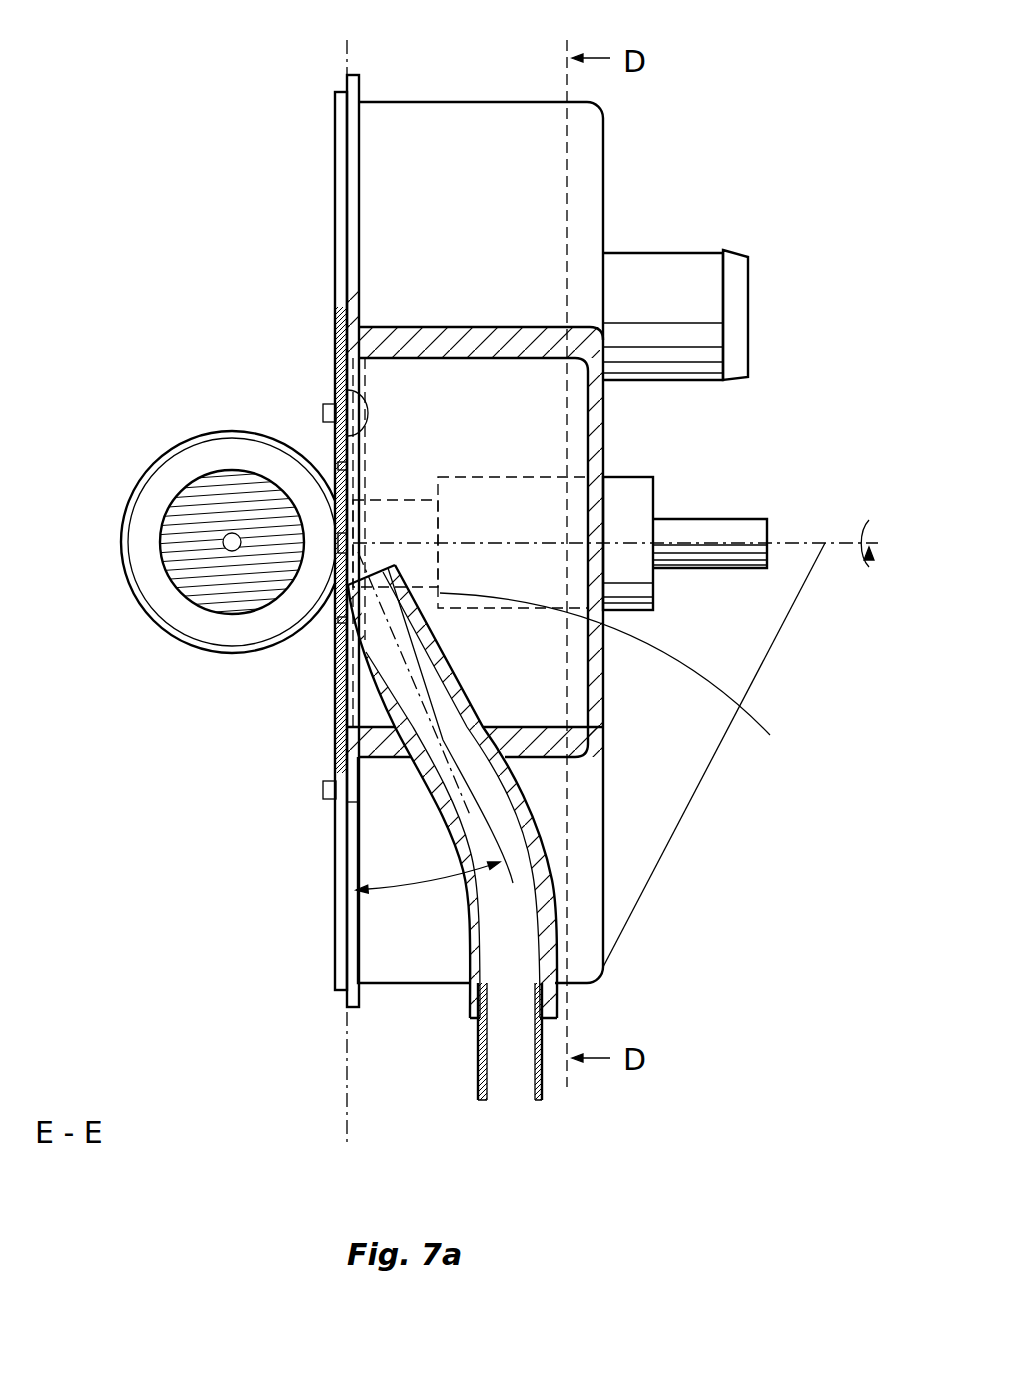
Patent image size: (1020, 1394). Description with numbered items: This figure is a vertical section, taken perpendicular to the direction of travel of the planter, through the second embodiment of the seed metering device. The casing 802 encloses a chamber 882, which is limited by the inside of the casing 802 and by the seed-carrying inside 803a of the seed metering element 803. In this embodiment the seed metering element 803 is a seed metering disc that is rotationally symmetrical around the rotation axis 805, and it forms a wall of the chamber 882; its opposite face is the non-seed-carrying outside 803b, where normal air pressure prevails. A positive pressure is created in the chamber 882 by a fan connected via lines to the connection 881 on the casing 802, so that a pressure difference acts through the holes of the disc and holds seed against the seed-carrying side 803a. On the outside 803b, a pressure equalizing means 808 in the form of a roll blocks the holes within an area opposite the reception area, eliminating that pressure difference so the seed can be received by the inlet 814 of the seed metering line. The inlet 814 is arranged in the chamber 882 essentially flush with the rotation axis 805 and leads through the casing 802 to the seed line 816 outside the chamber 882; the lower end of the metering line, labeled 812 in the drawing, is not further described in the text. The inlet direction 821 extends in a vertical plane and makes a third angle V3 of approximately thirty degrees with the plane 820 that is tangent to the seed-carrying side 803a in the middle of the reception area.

The casing 802 is at (605, 153).
The seed metering element 803 is at (345, 143).
The seed-carrying inside 803a is at (345, 400).
The outside 803b is at (336, 268).
The rotation axis 805 is at (742, 542).
The pressure equalizing means 808 is at (172, 448).
The tube end fitting 812 is at (466, 1031).
The inlet 814 is at (641, 684).
The seed line 816 is at (477, 1067).
The plane 820 is at (345, 1060).
The inlet direction 821 is at (487, 827).
The connection 881 is at (695, 253).
The chamber 882 is at (486, 423).
The third angle V3 is at (390, 890).